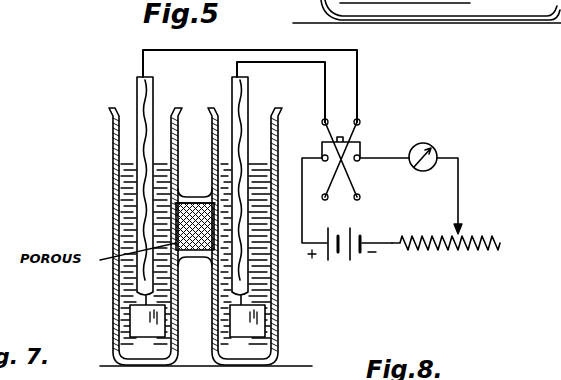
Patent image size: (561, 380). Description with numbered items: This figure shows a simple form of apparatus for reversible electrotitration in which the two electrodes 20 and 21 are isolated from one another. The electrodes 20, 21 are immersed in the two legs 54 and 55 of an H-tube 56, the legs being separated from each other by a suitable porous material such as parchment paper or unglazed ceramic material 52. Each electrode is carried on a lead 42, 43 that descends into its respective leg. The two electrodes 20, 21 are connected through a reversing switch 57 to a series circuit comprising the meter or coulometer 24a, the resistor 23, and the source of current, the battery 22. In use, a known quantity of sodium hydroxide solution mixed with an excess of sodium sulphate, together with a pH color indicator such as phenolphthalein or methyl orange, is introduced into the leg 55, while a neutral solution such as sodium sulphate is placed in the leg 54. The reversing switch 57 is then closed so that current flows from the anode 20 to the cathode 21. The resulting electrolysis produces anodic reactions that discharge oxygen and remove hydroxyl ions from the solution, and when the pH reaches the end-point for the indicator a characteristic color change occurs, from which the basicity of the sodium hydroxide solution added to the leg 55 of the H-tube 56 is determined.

The first electrode 42 is at (154, 97).
The second electrode 43 is at (251, 97).
The leg 54 is at (114, 229).
The leg 55 is at (256, 250).
The H-tube 56 is at (208, 183).
The unglazed ceramic material 52 is at (194, 262).
The cathode 21 is at (142, 318).
The anode 20 is at (248, 319).
The reversing switch 57 is at (356, 224).
The battery 22 is at (364, 236).
The resistor 23 is at (471, 233).
The coulometer 24a is at (453, 138).